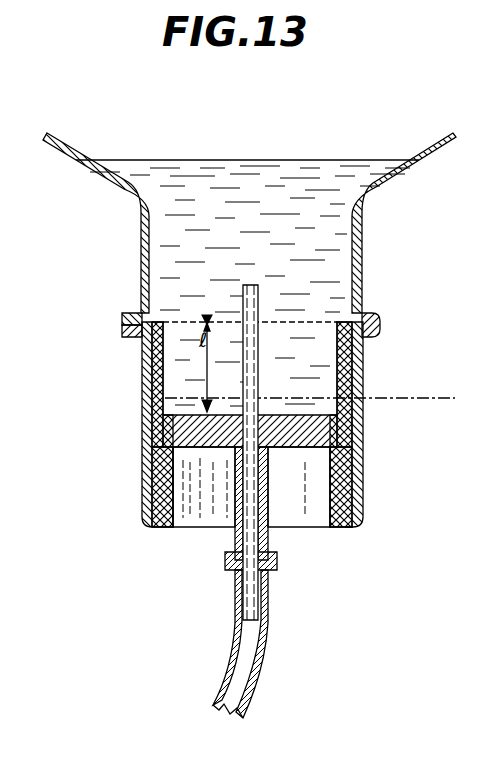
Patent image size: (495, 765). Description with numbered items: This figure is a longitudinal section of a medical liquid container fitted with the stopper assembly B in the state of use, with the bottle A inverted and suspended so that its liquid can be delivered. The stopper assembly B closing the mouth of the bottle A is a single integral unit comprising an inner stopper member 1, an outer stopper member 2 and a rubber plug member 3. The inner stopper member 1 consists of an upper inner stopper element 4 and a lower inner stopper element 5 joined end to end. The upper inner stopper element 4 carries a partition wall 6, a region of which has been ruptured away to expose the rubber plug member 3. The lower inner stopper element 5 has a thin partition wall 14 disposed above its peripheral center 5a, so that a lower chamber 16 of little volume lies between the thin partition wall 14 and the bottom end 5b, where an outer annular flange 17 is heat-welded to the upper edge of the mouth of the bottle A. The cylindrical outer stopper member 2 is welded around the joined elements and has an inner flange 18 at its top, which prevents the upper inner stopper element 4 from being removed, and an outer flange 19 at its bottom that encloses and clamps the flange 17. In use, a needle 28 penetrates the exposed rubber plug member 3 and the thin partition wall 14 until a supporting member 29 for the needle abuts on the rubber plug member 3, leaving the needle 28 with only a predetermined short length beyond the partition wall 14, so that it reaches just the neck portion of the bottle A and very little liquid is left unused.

The bottle A is at (366, 223).
The stopper assembly B is at (366, 418).
The inner stopper member 1 is at (143, 513).
The outer stopper member 2 is at (150, 394).
The plug member 3 is at (326, 431).
The upper inner stopper element 4 is at (340, 490).
The lower inner stopper element 5 is at (363, 365).
The peripheral center 5a is at (324, 405).
The bottom end 5b is at (345, 320).
The partition wall 6 is at (155, 465).
The thin partition wall 14 is at (312, 416).
The lower chamber 16 is at (381, 323).
The outer annular flange 17 is at (133, 318).
The inner flange 18 is at (345, 527).
The outer flange 19 is at (128, 335).
The needle 28 is at (258, 290).
The supporting member 29 is at (272, 544).